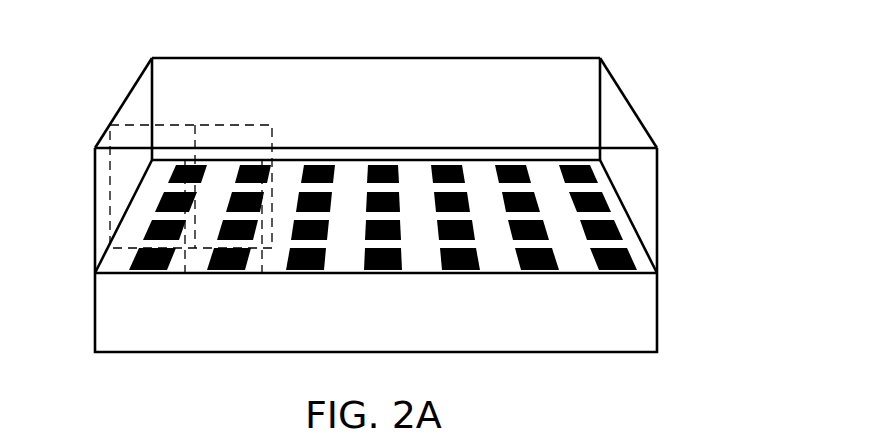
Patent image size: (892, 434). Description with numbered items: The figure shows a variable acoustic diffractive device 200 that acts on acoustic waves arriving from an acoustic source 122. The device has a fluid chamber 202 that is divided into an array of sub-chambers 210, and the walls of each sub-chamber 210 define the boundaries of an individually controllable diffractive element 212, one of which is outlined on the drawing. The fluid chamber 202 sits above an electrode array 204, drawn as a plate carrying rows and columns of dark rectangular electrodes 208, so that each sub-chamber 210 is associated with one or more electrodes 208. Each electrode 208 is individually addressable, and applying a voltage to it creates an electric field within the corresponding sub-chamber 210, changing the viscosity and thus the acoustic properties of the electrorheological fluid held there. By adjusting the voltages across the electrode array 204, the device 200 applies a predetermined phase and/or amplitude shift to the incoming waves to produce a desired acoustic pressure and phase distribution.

The variable acoustic diffractive device 200 is at (406, 181).
The fluid chamber 202 is at (657, 203).
The acoustic source 122 is at (657, 311).
The electrode array 204 is at (377, 146).
The electrode 208 is at (303, 270).
The sub-chamber 210 is at (126, 284).
The individually controllable diffractive element 212 is at (144, 122).